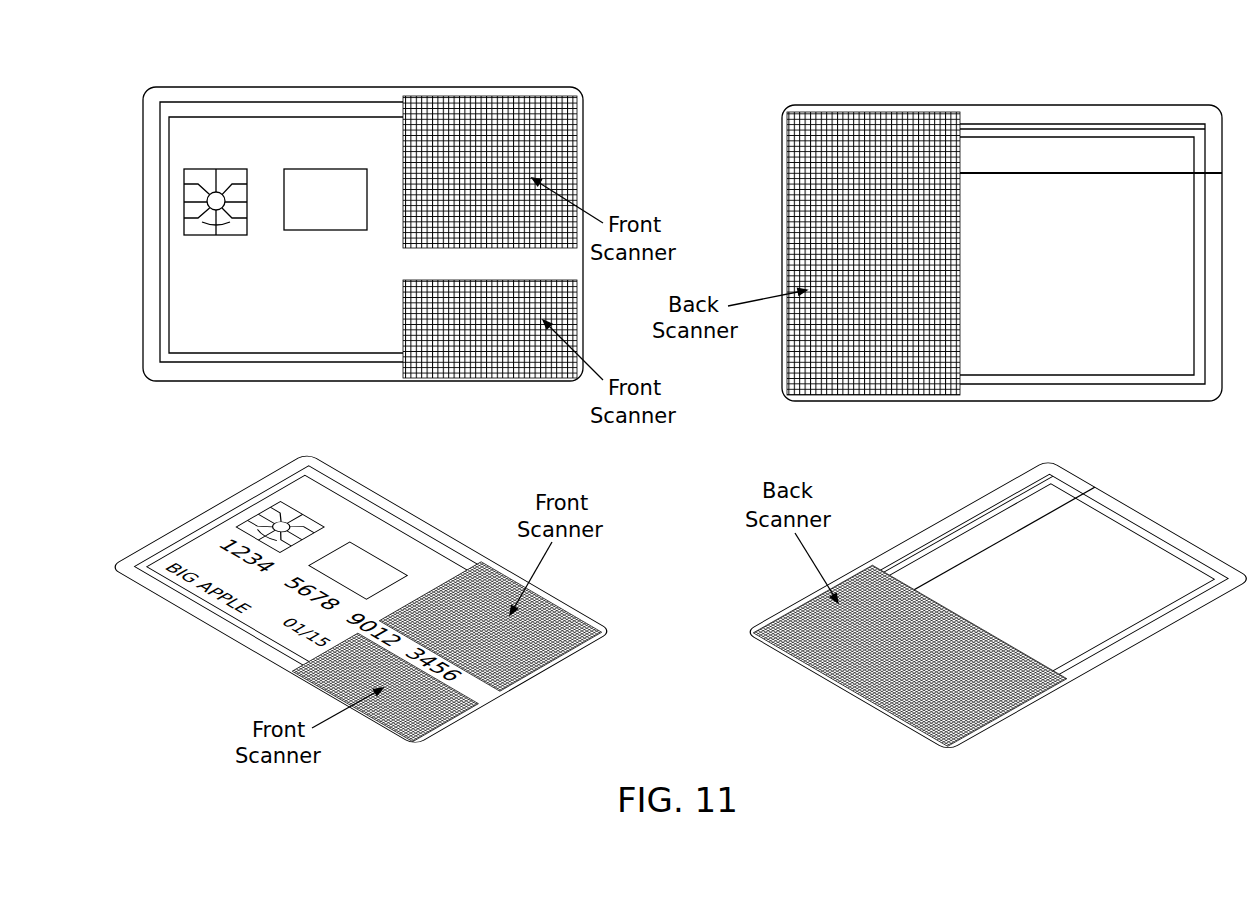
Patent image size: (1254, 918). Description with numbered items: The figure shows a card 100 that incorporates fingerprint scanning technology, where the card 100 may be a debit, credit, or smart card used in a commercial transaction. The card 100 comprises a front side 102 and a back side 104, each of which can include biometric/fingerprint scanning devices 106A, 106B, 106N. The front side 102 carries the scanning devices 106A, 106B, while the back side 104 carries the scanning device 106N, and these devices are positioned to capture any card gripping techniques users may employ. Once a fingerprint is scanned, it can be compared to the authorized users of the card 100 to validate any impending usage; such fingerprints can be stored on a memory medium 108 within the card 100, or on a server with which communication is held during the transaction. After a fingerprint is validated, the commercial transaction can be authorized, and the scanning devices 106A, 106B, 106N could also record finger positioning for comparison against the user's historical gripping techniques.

The card 100 is at (690, 34).
The front side 102 is at (203, 127).
The back side 104 is at (1064, 155).
The biometric/fingerprint scanning device 106A is at (583, 158).
The biometric/fingerprint scanning device 106B is at (532, 348).
The biometric/fingerprint scanning device 106N is at (840, 112).
The memory medium 108 is at (327, 169).